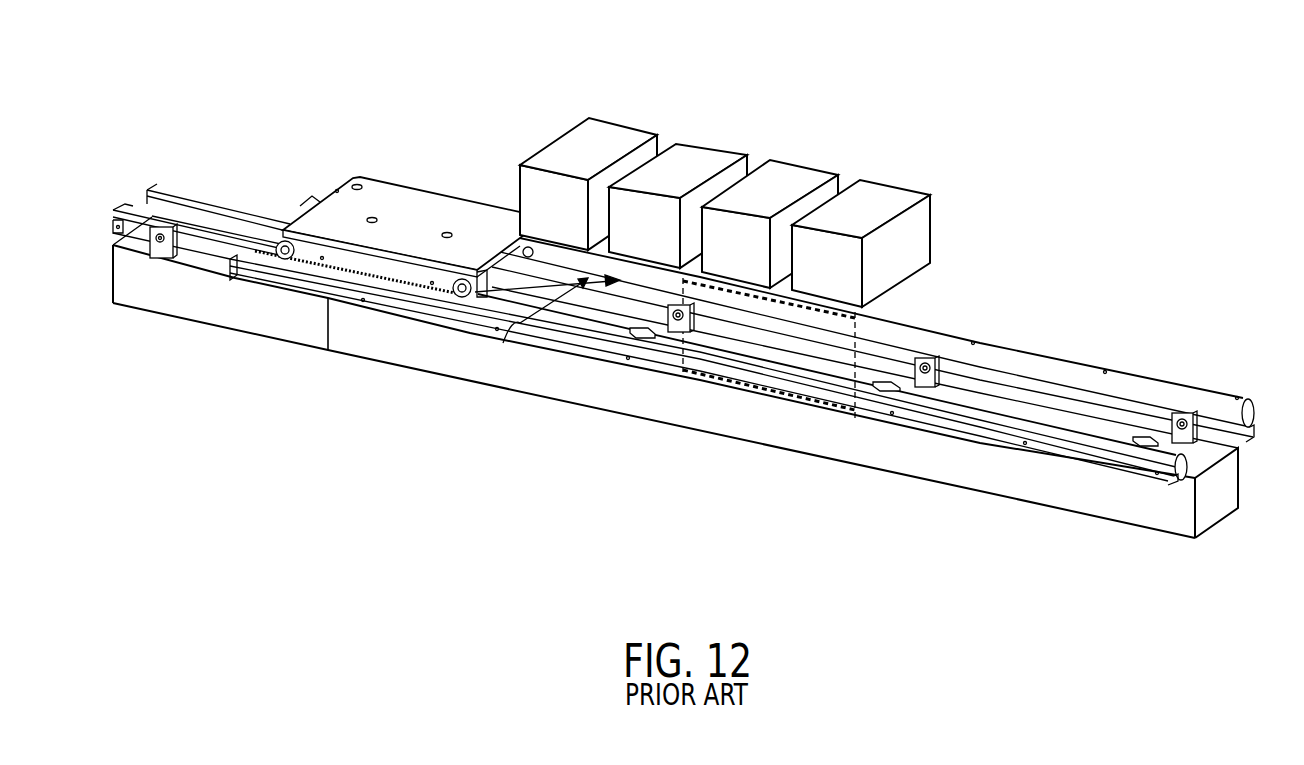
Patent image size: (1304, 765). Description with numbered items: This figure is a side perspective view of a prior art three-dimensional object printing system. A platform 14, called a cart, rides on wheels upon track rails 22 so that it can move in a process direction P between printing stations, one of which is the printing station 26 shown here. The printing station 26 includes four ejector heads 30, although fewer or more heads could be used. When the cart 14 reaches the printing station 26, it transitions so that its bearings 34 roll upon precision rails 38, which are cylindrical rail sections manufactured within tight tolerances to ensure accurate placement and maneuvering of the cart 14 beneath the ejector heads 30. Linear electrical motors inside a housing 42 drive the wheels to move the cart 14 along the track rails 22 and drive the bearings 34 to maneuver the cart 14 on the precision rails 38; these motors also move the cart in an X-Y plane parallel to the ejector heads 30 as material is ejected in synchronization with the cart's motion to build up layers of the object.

The platform 14 is at (430, 187).
The track rails 22 is at (133, 206).
The printing station 26 is at (730, 172).
The ejector heads 30 is at (940, 140).
The bearings 34 is at (281, 241).
The precision rails 38 is at (1028, 350).
The housing 42 is at (955, 472).
The process direction P is at (547, 325).